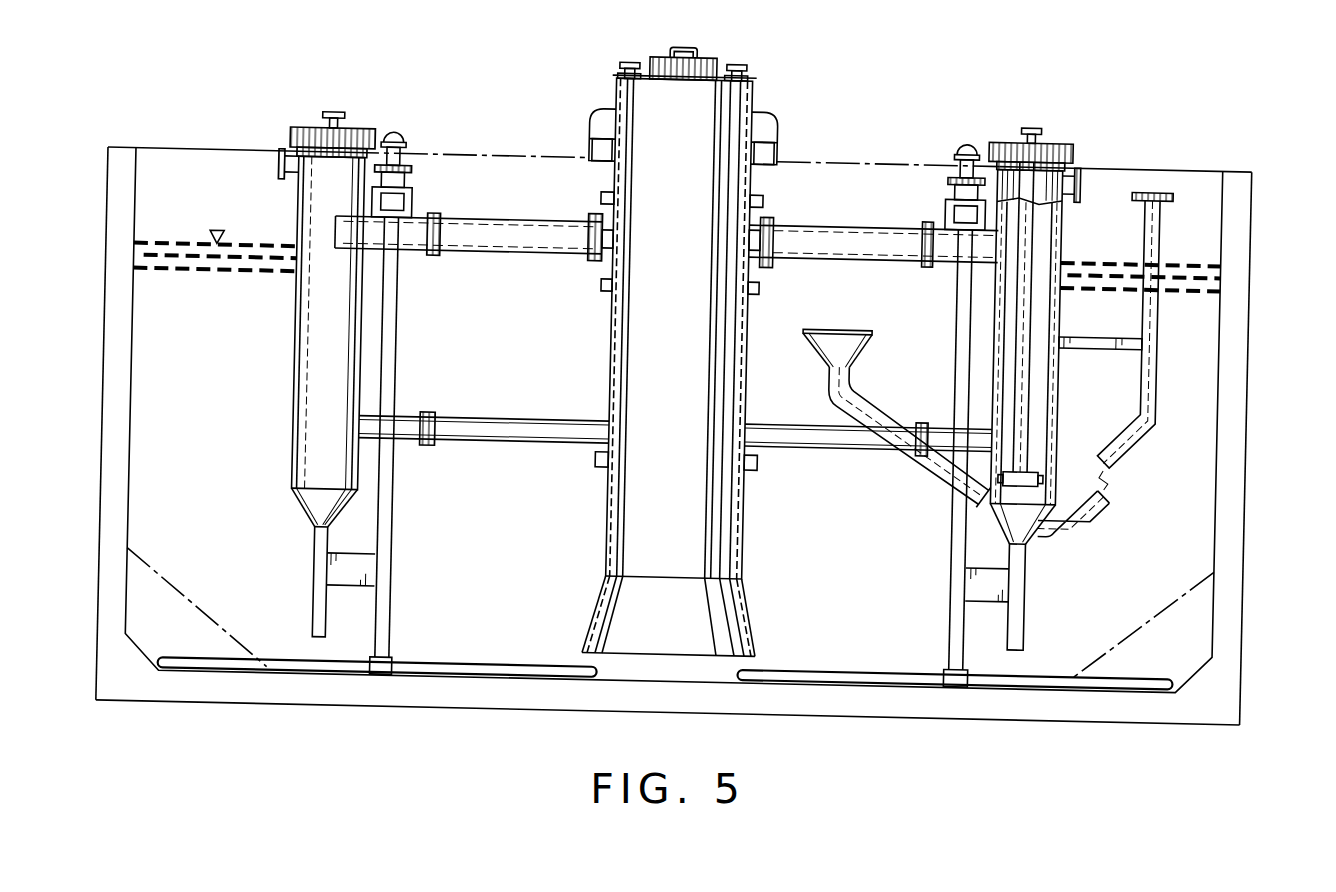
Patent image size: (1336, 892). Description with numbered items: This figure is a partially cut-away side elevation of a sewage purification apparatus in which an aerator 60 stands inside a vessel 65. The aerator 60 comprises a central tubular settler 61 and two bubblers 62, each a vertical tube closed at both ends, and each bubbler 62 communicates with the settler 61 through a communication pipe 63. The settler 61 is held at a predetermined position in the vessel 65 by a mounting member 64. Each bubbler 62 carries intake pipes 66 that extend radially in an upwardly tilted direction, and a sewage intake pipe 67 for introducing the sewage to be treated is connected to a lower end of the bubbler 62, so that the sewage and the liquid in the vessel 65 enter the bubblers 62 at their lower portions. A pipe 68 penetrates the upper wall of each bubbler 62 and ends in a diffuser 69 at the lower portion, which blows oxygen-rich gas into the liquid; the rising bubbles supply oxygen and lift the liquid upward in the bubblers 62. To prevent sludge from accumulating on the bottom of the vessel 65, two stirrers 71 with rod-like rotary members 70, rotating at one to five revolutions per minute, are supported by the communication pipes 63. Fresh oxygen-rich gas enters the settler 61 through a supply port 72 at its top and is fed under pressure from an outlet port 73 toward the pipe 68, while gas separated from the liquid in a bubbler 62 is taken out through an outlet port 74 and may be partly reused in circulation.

The aerator 60 is at (296, 452).
The tubular settler 61 is at (753, 492).
The bubbler 62 is at (299, 342).
The communication pipe 63 is at (517, 222).
The mounting member 64 is at (590, 140).
The vessel 65 is at (1254, 380).
The intake pipe 66 is at (927, 444).
The sewage intake pipe 67 is at (1161, 385).
The pipe 68 is at (335, 108).
The diffuser 69 is at (1045, 457).
The rod-like rotary member 70 is at (491, 656).
The stirrer 71 is at (406, 136).
The supply port 72 is at (736, 56).
The outlet port 73 is at (629, 51).
The outlet port 74 is at (278, 160).